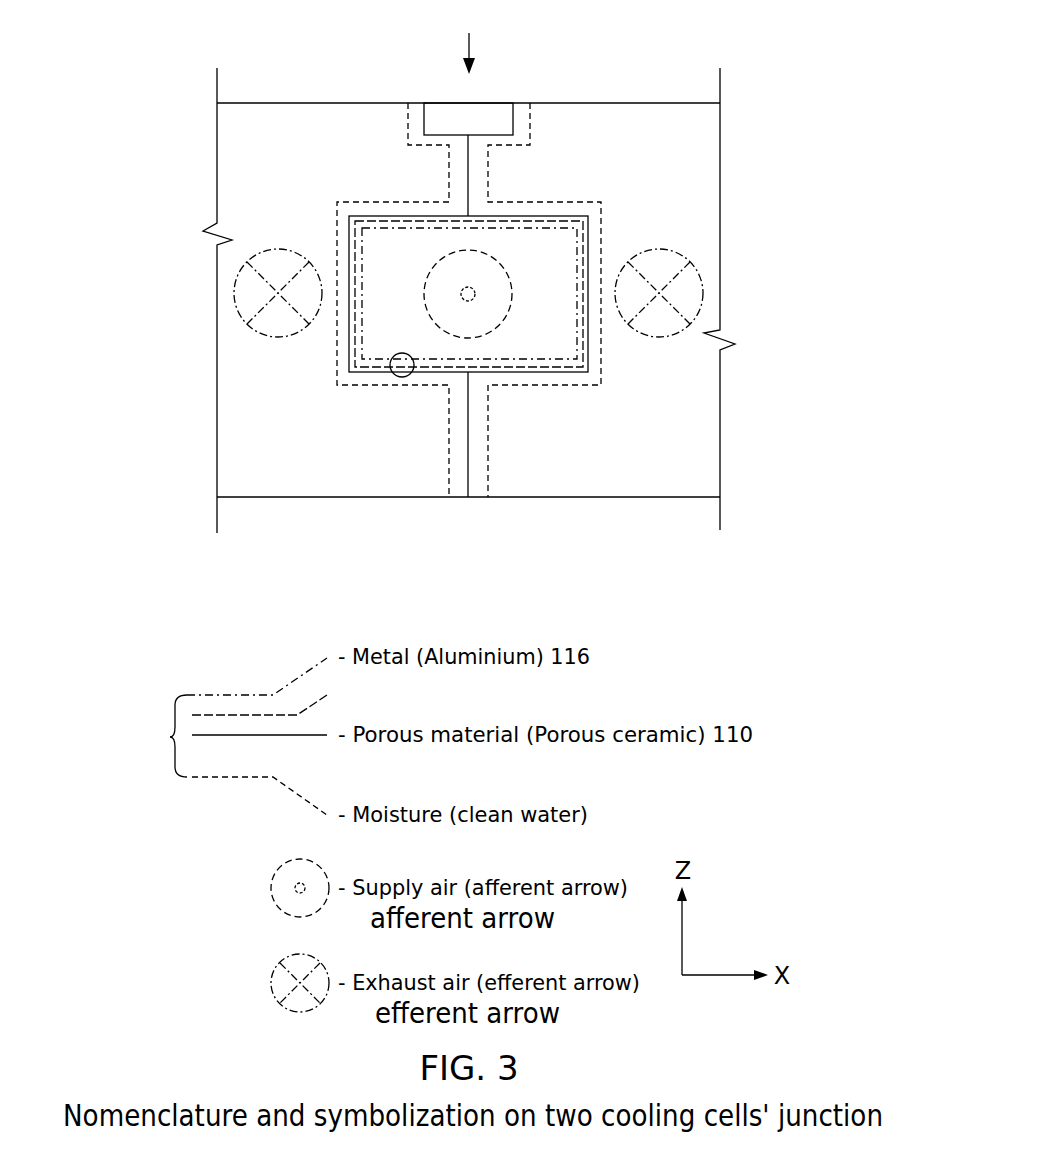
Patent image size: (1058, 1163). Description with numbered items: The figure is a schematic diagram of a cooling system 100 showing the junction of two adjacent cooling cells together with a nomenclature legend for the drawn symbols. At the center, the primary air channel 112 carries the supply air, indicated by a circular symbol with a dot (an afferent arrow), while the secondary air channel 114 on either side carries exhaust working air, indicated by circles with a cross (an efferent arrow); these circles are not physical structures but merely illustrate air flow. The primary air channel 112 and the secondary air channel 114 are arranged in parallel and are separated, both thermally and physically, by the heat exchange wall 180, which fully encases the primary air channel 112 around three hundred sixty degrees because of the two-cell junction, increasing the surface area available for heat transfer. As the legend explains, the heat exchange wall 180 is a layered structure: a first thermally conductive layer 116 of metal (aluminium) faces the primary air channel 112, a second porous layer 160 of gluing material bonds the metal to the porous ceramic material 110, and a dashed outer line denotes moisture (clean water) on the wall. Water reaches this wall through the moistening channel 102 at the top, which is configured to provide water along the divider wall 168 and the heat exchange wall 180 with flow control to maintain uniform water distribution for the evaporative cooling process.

The cooling system 100 is at (684, 36).
The moistening channel 102 is at (490, 105).
The heat exchange wall (structural ceramic) 110 is at (348, 363).
The primary air channel 112 is at (427, 280).
The secondary air channel 114 is at (240, 272).
The first thermally conductive layer 116 is at (527, 359).
The second porous layer 160 is at (488, 468).
The divider wall 168 is at (469, 172).
The heat exchange wall 180 is at (402, 377).